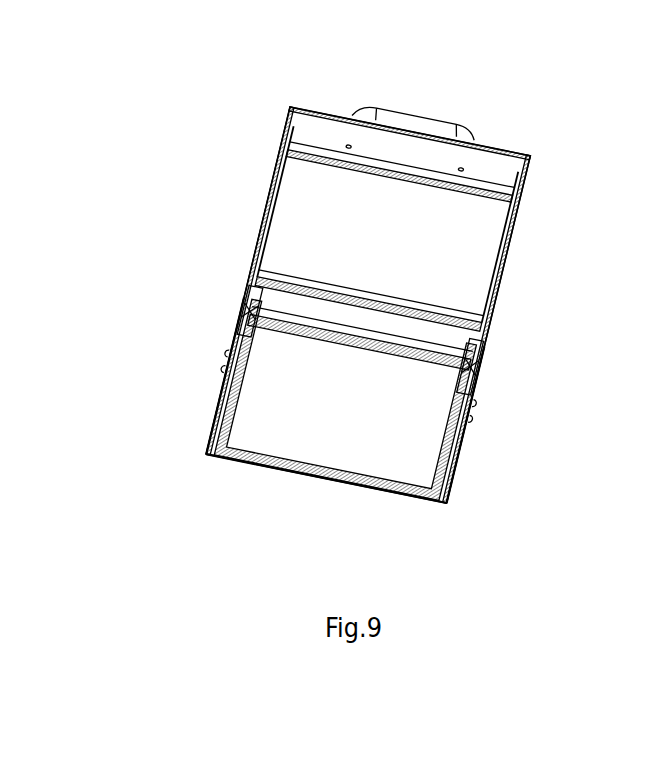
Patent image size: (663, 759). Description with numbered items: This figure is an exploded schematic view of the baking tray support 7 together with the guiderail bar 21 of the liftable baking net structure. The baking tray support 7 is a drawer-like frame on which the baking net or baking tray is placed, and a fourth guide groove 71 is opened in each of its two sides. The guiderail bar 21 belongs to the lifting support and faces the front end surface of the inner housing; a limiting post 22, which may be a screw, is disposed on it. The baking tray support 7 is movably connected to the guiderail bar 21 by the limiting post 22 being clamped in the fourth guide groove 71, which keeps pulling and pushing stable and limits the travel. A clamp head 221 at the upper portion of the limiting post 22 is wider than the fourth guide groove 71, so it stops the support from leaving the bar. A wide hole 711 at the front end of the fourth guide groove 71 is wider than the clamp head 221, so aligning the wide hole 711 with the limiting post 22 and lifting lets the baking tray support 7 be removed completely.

The baking tray support 7 is at (290, 107).
The fourth guide groove 71 is at (268, 197).
The wide hole 711 is at (278, 170).
The guiderail bar 21 is at (222, 390).
The limiting post 22 is at (235, 330).
The clamp head 221 is at (233, 327).